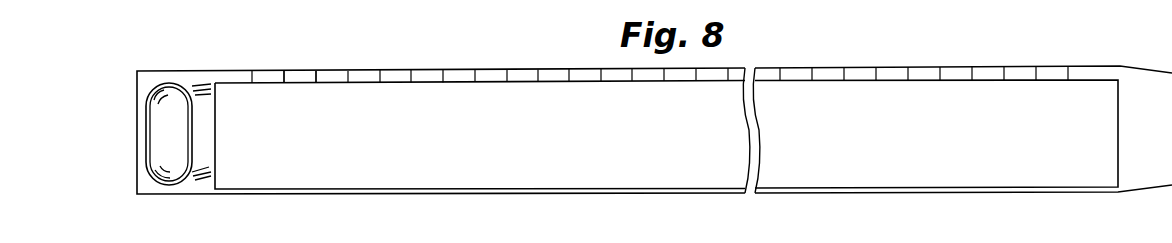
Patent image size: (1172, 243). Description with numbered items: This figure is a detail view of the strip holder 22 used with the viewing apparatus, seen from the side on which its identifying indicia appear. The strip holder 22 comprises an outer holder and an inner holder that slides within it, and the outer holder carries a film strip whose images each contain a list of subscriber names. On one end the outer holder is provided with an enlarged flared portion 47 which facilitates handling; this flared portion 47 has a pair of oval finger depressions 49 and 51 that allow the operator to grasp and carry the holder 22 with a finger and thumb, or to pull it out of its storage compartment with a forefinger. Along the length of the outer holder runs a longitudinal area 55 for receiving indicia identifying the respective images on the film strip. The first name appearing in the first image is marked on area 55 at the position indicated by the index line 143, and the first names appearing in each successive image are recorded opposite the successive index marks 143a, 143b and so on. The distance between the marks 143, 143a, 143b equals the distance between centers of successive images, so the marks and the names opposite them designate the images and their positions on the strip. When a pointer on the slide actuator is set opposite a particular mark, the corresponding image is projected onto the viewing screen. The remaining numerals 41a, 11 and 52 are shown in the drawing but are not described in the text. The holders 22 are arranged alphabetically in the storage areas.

The housing body 41a is at (1143, 66).
The strip holder 22 is at (616, 178).
The index line 143 is at (254, 82).
The index mark 143a is at (286, 81).
The index mark 143b is at (318, 81).
The finger depression 49 is at (168, 102).
The flared portion 47 is at (200, 83).
The longitudinal area 55 is at (892, 137).
The device 11 is at (229, 237).
The finger depression 51 is at (186, 238).
The element 52 is at (261, 238).